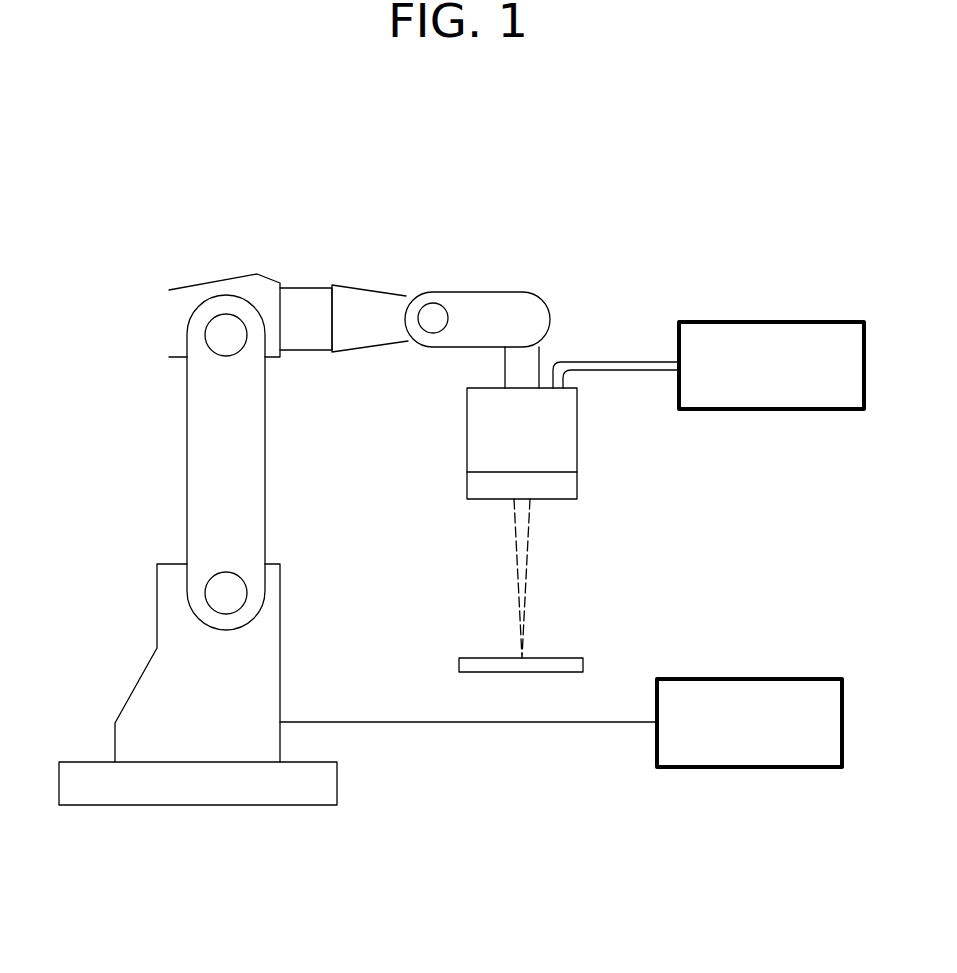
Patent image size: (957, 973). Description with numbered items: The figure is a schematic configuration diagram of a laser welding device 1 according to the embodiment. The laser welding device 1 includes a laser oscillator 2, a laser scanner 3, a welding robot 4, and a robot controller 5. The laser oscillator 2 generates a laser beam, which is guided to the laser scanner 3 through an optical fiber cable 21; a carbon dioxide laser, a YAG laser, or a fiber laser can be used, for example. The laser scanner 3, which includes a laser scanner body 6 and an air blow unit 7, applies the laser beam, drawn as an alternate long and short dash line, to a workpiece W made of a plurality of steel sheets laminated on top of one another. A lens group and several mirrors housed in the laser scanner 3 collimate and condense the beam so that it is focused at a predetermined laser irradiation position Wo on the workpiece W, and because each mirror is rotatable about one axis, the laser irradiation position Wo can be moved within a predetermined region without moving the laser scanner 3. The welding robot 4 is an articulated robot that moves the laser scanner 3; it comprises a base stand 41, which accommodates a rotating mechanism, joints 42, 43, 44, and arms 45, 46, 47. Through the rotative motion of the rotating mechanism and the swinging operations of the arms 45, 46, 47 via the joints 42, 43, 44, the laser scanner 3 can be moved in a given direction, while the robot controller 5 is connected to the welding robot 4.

The laser welding device 1 is at (113, 163).
The laser oscillator 2 is at (750, 322).
The laser scanner 3 is at (531, 443).
The welding robot 4 is at (242, 272).
The robot controller 5 is at (750, 679).
The laser scanner body 6 is at (472, 428).
The air blow unit 7 is at (472, 486).
The optical fiber cable 21 is at (606, 360).
The base stand 41 is at (153, 685).
The joint 42 is at (232, 593).
The joint 43 is at (230, 338).
The joint 44 is at (434, 306).
The arm 45 is at (248, 463).
The arm 46 is at (367, 297).
The arm 47 is at (497, 298).
The workpiece W is at (557, 655).
The laser irradiation position Wo is at (520, 655).